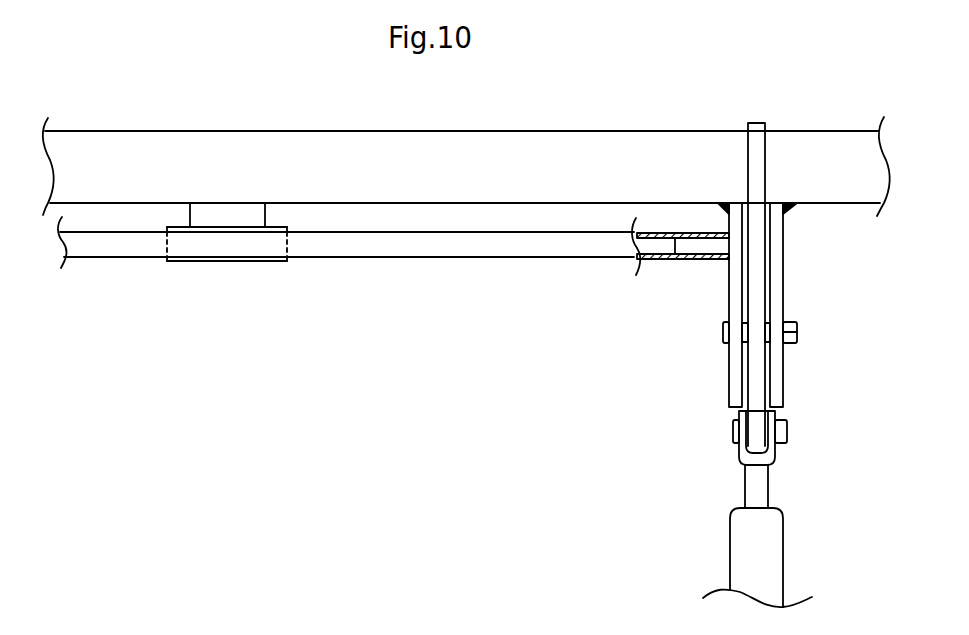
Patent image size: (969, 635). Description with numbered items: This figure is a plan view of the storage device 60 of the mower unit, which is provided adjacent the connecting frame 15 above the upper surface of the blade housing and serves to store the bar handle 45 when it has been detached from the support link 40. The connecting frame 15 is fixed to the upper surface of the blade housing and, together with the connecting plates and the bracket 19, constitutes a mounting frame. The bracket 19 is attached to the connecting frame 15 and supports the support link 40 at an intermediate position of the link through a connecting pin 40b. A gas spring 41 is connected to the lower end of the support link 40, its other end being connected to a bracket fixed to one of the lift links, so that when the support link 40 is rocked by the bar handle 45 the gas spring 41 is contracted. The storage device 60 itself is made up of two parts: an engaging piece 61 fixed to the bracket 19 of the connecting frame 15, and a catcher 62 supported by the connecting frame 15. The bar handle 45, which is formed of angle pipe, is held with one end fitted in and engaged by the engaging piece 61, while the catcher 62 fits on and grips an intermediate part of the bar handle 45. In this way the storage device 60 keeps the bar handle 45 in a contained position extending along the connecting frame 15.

The connecting frame 15 is at (495, 187).
The bar handle 45 is at (403, 253).
The catcher 62 is at (225, 262).
The storage device 60 is at (180, 305).
The engaging piece 61 is at (700, 245).
The bracket 19 is at (729, 382).
The support link 40 is at (755, 167).
The connecting pin 40b is at (797, 332).
The gas spring 41 is at (743, 549).